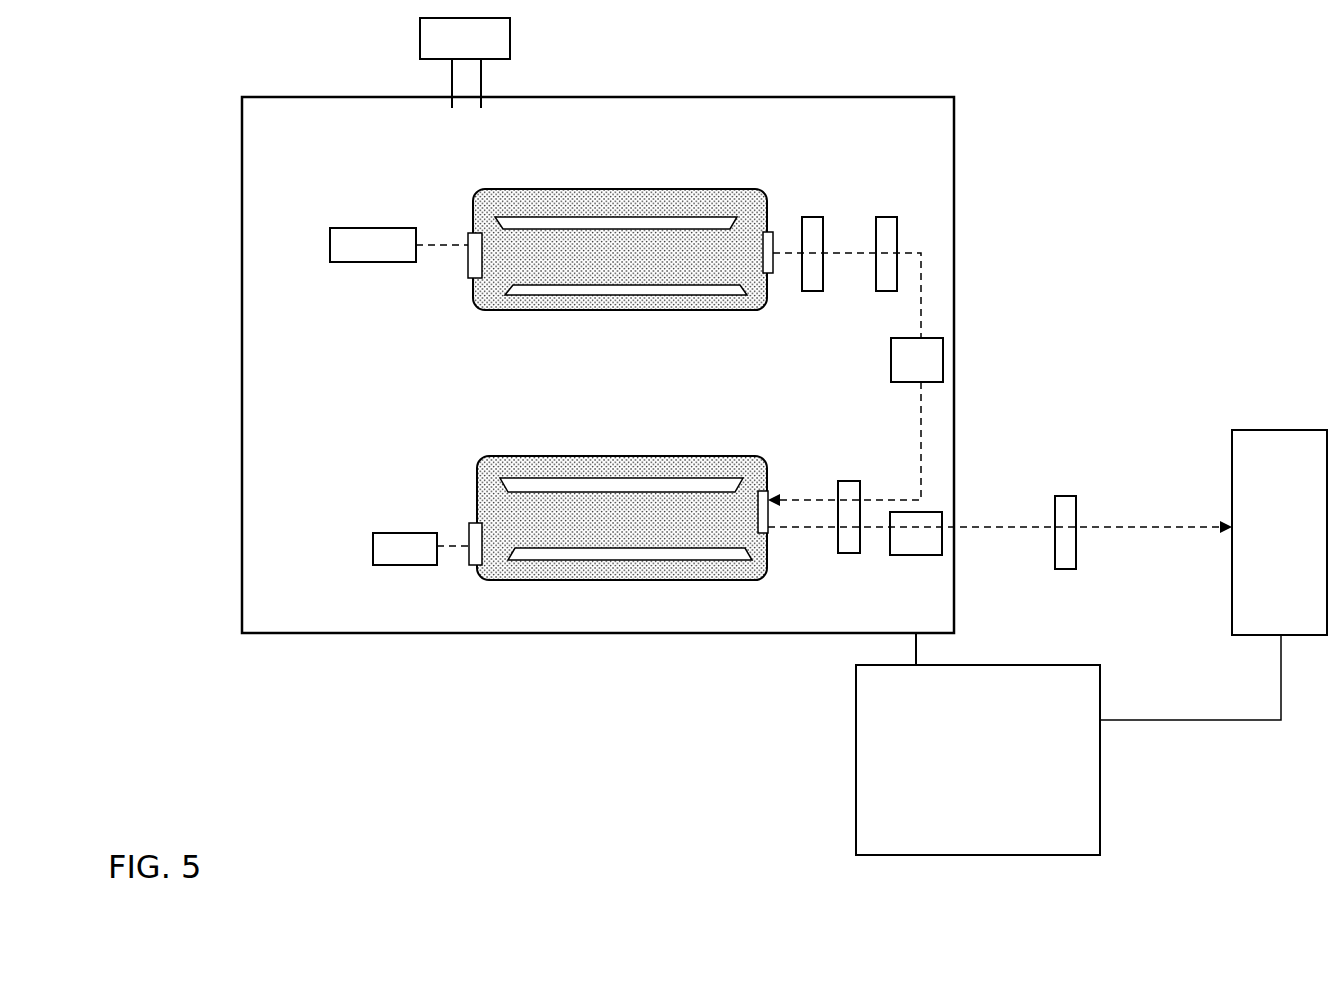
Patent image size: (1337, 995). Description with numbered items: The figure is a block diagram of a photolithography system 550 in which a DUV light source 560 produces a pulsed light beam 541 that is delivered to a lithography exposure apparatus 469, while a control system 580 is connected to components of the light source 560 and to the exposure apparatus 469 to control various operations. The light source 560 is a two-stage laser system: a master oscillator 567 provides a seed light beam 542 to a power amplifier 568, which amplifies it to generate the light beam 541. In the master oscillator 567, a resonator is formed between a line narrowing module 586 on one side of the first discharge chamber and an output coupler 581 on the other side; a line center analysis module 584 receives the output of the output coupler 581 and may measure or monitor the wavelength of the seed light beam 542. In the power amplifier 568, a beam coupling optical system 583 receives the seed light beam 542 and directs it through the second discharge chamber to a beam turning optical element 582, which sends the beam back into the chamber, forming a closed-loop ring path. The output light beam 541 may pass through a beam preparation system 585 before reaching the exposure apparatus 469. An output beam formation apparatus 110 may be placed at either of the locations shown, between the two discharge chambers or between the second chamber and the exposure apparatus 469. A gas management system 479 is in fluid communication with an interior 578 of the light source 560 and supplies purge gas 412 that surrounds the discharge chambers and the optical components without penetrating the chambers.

The photolithography system 550 is at (373, 52).
The gas management system 479 is at (465, 63).
The light source 560 is at (897, 97).
The master oscillator 567 is at (338, 207).
The power amplifier 568 is at (313, 500).
The purge gas 412 is at (434, 348).
The line narrowing module 586 is at (399, 245).
The beam turning optical element 582 is at (421, 549).
The interior 578 is at (914, 136).
The output coupler 581 is at (815, 217).
The line center analysis module 584 is at (887, 232).
The beam coupling optical system 583 is at (862, 545).
The beam preparation system 585 is at (1078, 550).
The output beam formation apparatus 110 is at (916, 446).
The seed light beam 542 is at (880, 500).
The pulsed light beam 541 is at (990, 527).
The lithography exposure apparatus 469 is at (1279, 532).
The control system 580 is at (1068, 744).